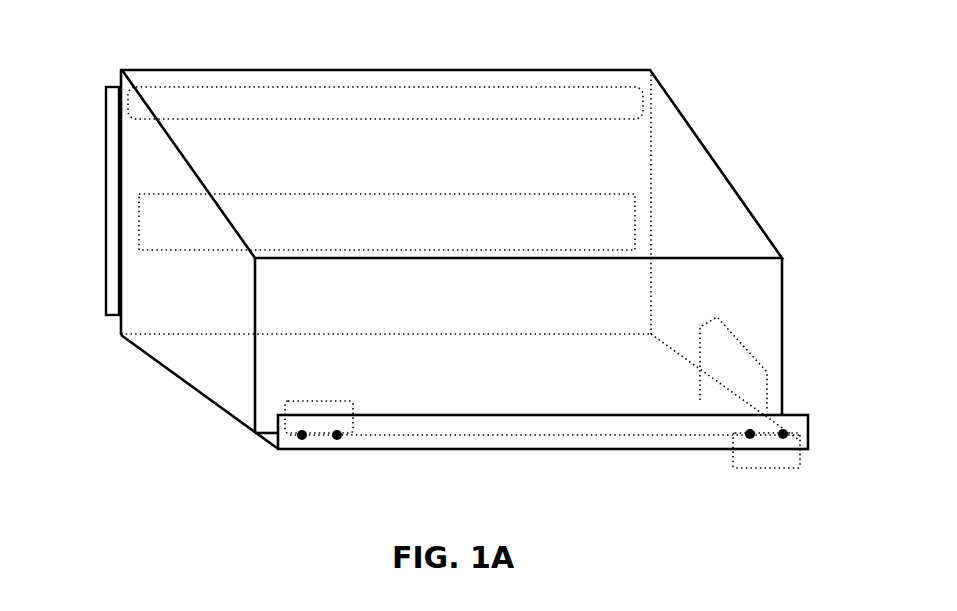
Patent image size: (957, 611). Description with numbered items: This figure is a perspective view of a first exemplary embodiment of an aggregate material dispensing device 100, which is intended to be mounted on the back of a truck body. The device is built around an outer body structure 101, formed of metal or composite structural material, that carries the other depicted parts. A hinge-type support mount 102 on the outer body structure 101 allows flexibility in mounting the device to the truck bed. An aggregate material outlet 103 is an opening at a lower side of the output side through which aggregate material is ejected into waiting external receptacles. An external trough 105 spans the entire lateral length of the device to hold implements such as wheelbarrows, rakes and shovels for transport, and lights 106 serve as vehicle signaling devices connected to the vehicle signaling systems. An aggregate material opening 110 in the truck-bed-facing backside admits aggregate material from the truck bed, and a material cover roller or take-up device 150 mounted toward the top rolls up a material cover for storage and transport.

The aggregate material dispensing device 100 is at (98, 31).
The outer body structure 101 is at (186, 388).
The hinge-type support mount 102 is at (106, 203).
The aggregate material outlet 103 is at (733, 364).
The external trough 105 is at (386, 443).
The lights 106 is at (320, 400).
The aggregate material opening 110 is at (203, 232).
The material cover roller or take-up device 150 is at (368, 112).